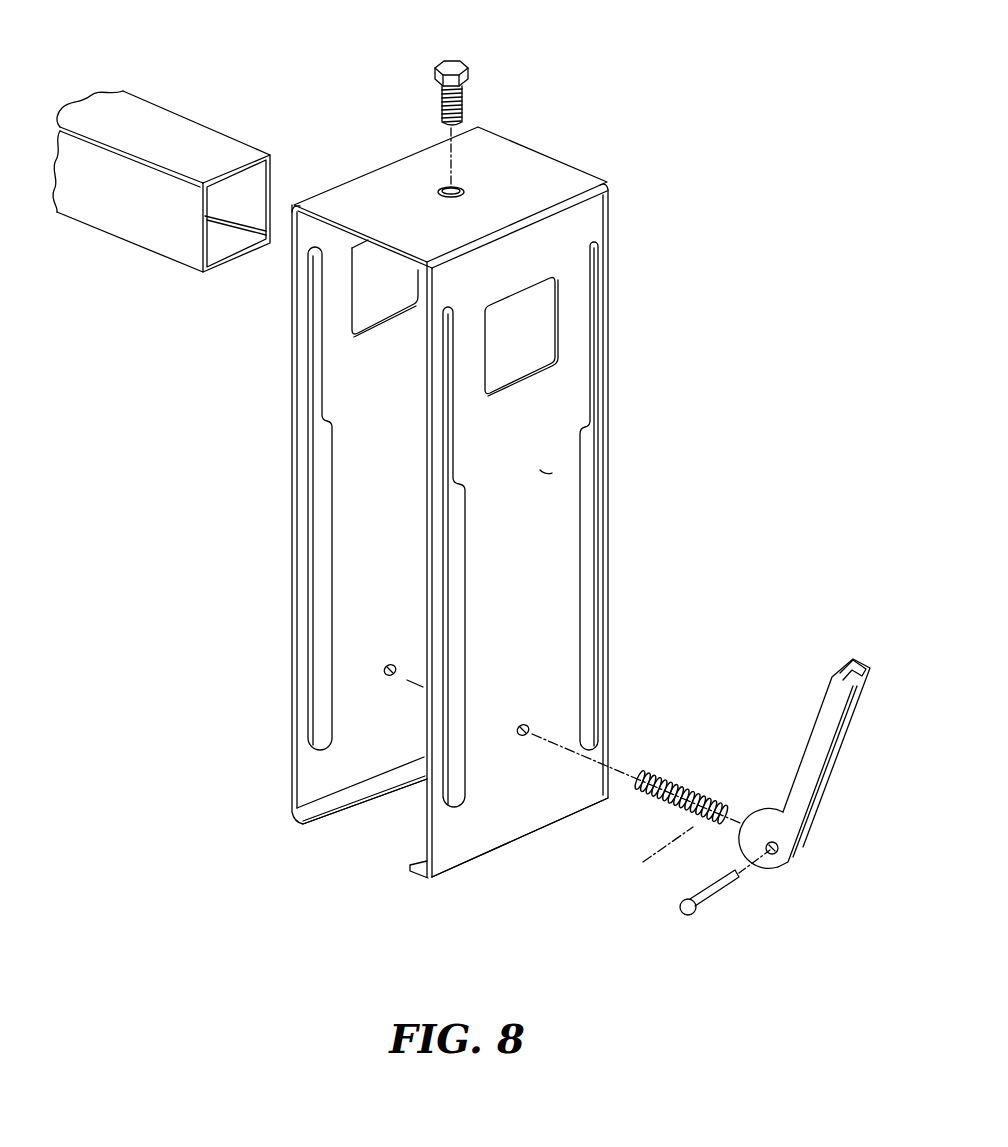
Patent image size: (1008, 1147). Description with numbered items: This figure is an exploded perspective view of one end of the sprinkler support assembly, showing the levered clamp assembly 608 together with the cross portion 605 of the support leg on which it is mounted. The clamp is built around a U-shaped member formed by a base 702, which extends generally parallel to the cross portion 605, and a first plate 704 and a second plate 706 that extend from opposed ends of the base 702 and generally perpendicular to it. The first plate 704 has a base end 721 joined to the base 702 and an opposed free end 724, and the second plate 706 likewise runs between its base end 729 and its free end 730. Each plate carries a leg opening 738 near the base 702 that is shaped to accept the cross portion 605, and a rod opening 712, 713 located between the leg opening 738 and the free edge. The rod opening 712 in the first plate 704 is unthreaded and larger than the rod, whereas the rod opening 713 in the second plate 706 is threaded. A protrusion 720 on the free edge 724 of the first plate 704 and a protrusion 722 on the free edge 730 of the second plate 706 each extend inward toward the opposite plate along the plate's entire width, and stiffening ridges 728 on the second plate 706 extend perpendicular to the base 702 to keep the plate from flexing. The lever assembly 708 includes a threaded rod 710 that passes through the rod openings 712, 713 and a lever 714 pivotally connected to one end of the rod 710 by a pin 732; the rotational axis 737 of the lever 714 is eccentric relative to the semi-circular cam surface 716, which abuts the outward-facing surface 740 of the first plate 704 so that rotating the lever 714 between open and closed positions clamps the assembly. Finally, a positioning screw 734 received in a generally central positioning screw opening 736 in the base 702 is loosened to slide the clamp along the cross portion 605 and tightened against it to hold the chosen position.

The cross portion 605 is at (173, 130).
The levered clamp assembly 608 is at (604, 43).
The base 702 is at (533, 163).
The first plate 704 is at (542, 813).
The second plate 706 is at (344, 660).
The lever assembly 708 is at (814, 760).
The threaded rod 710 is at (677, 787).
The rod opening 712 is at (523, 722).
The rod opening 713 is at (393, 663).
The lever 714 is at (838, 760).
The cam surface 716 is at (770, 808).
The protrusion 720 is at (408, 868).
The base end 721 is at (605, 182).
The protrusion 722 is at (315, 828).
The free end 724 is at (482, 855).
The stiffening ridges 728 is at (452, 548).
The base end 729 is at (337, 187).
The free end 730 is at (355, 817).
The pin 732 is at (715, 887).
The positioning screw 734 is at (440, 63).
The positioning screw opening 736 is at (448, 188).
The rotational axis 737 is at (670, 842).
The leg opening 738 is at (375, 307).
The outward-facing surface 740 is at (545, 460).